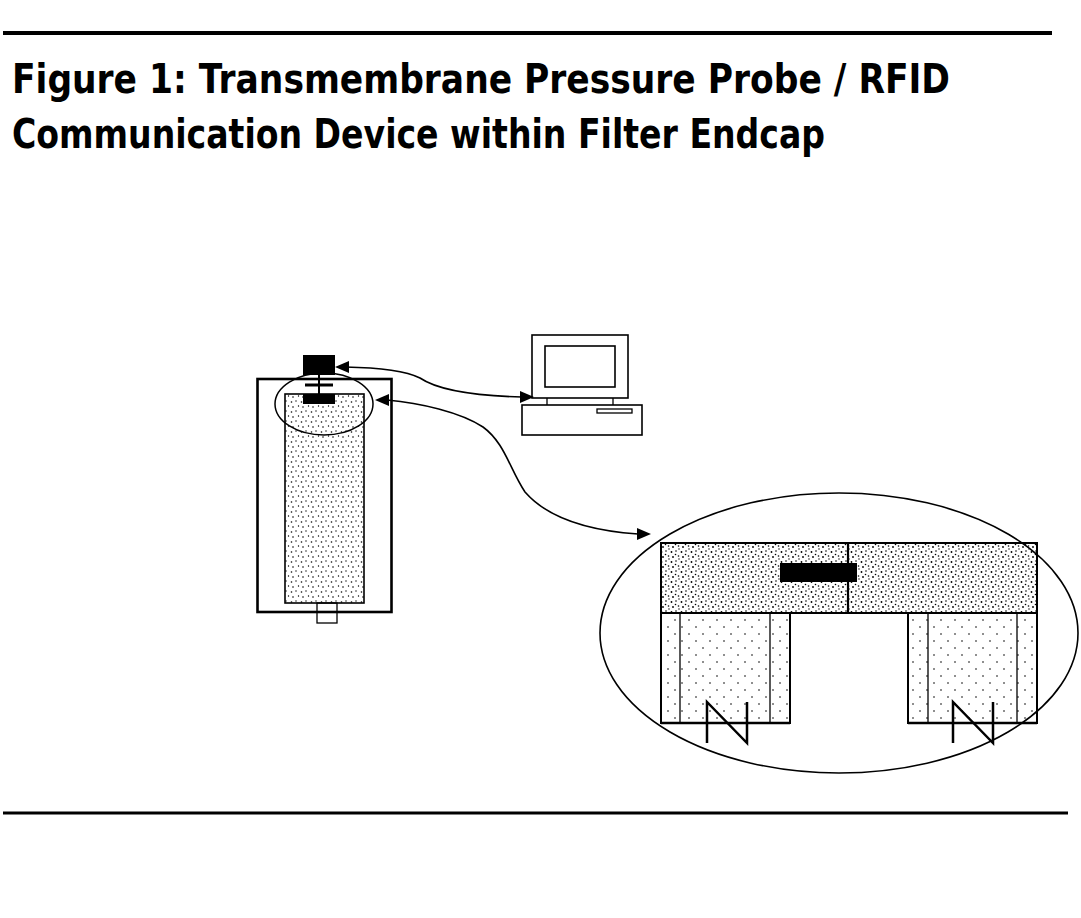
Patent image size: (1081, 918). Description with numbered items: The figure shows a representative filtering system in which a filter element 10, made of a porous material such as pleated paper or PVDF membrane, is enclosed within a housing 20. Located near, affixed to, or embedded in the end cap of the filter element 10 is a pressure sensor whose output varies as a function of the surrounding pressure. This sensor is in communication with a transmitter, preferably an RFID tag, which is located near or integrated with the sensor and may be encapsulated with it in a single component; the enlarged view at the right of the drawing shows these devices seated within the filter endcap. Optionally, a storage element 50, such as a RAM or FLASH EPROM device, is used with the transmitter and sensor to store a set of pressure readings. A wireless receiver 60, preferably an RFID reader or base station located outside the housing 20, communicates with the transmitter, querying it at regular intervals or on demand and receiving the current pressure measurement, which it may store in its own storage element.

The filter element 10 is at (318, 553).
The housing 20 is at (256, 453).
The storage element 50 is at (319, 356).
The wireless receiver 60 is at (590, 357).